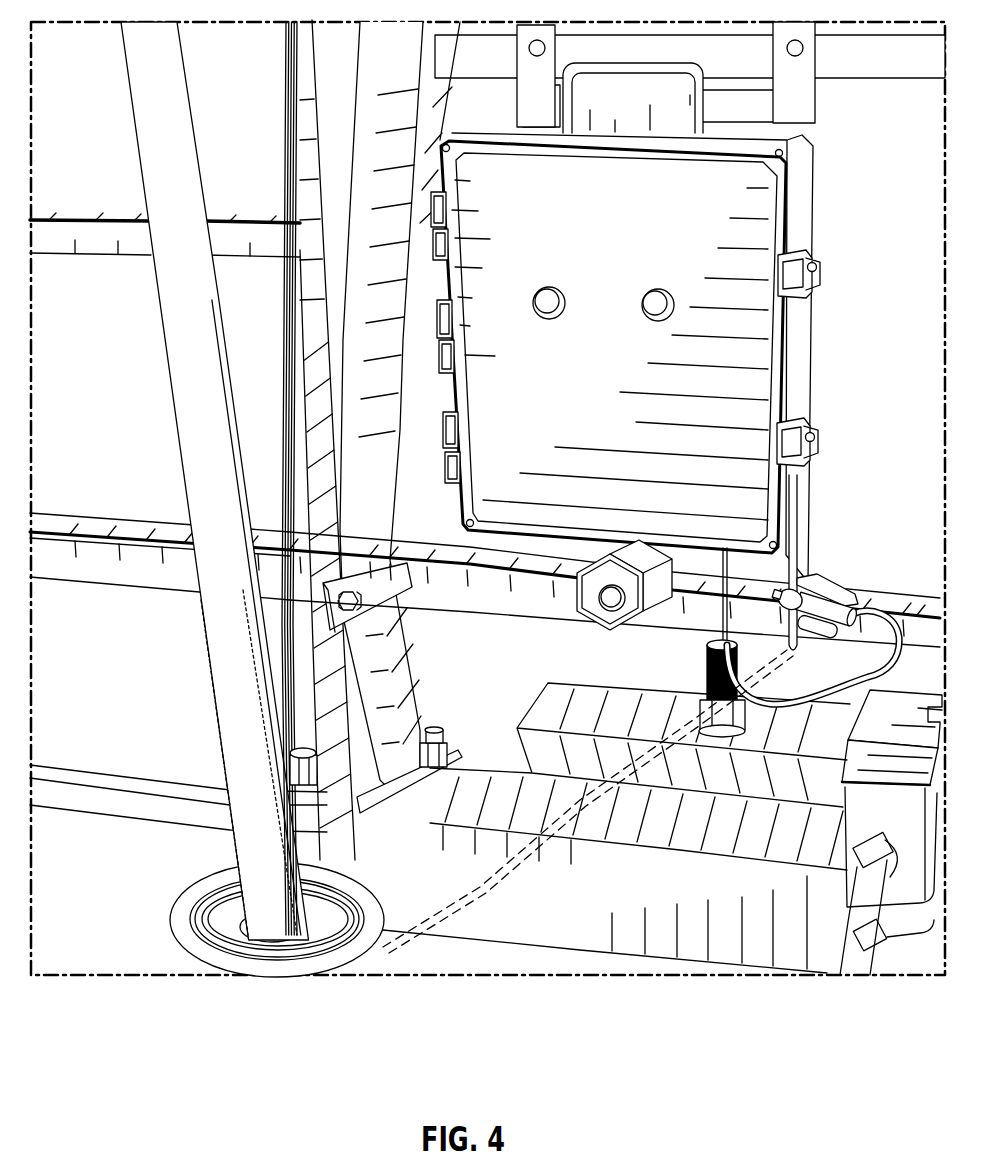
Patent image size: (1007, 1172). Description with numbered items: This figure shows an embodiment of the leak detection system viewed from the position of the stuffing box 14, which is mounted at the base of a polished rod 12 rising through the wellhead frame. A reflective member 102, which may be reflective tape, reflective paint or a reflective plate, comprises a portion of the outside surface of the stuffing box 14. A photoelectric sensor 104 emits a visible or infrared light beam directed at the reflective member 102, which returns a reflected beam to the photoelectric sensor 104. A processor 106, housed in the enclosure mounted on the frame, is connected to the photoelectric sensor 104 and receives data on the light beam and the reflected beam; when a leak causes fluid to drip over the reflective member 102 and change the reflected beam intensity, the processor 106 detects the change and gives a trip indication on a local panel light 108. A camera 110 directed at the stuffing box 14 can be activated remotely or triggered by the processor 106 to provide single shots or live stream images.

The mast 12 is at (213, 688).
The stuffing box 14 is at (215, 928).
The reflective member 102 is at (365, 965).
The photoelectric sensor 104 is at (860, 600).
The processor 106 is at (630, 445).
The local panel light 108 is at (654, 301).
The camera 110 is at (617, 640).